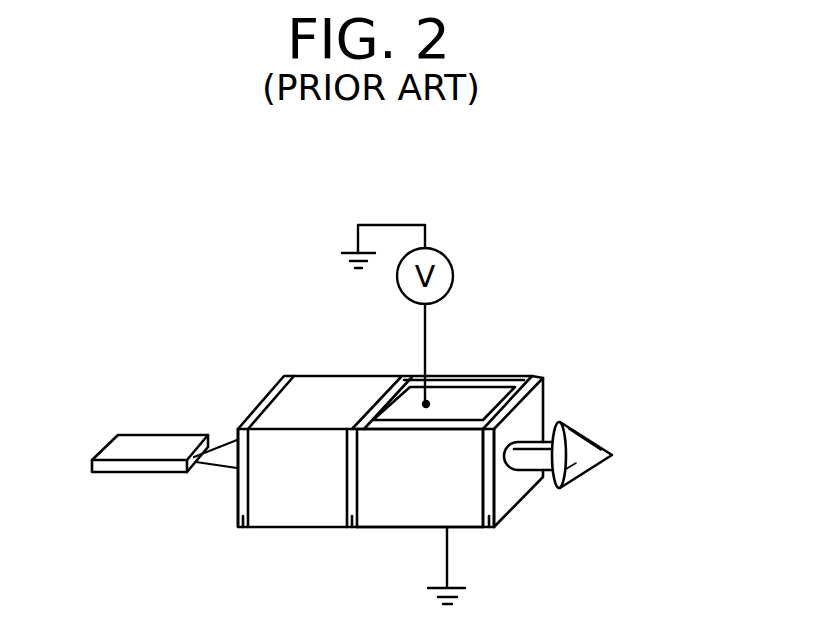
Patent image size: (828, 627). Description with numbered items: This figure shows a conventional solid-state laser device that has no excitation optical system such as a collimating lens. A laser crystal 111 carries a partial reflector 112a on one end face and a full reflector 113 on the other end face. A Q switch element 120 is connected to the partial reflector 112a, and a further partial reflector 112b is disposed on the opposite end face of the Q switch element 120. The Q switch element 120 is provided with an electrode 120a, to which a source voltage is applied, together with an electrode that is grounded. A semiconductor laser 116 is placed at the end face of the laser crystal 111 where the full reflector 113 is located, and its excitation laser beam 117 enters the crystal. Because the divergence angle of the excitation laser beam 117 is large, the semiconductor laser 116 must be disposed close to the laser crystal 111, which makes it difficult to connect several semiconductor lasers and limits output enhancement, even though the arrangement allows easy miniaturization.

The laser crystal 111 is at (327, 388).
The partial reflector 112a is at (352, 529).
The partial reflector 112b is at (490, 529).
The full reflector 113 is at (245, 529).
The semiconductor laser 116 is at (130, 443).
The excitation laser beam 117 is at (225, 453).
The Q switch element 120 is at (443, 463).
The electrode 120a is at (489, 393).